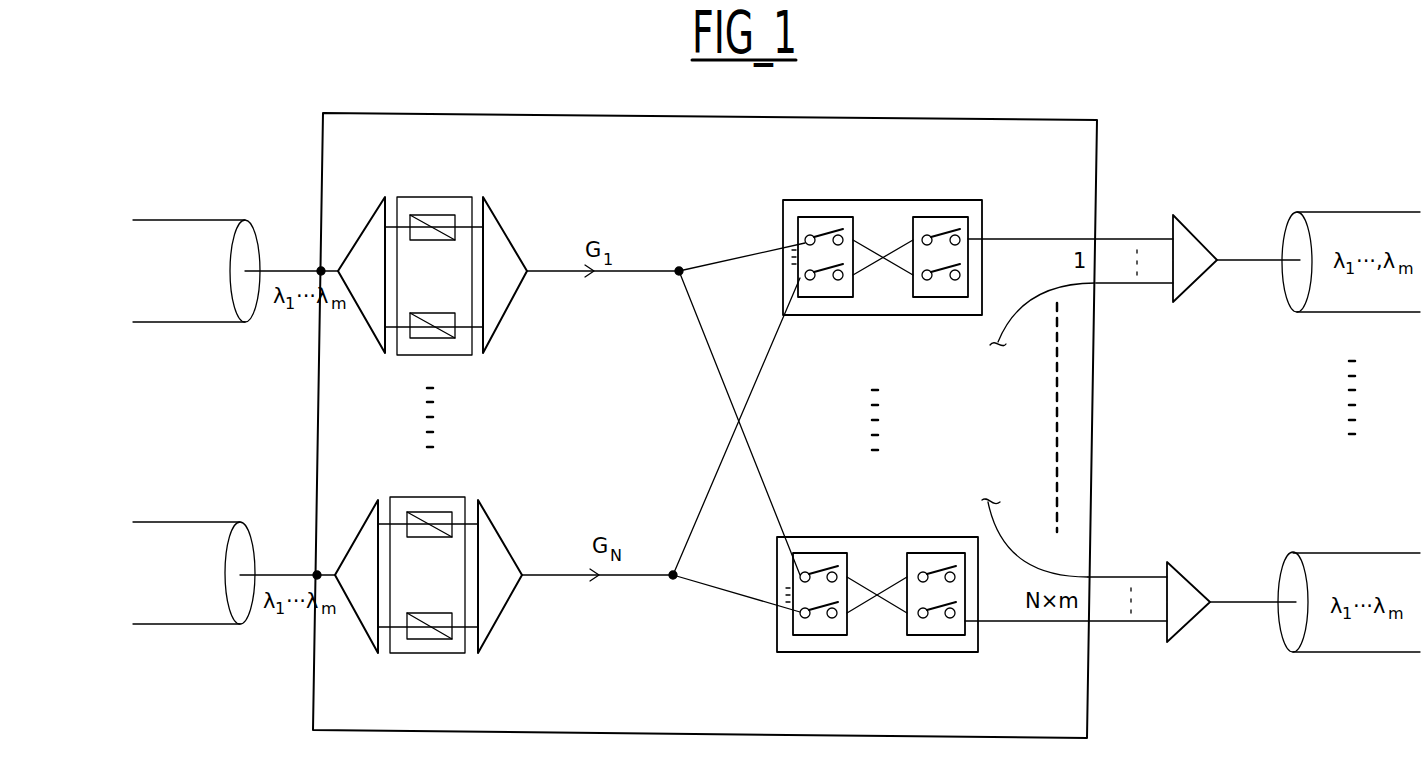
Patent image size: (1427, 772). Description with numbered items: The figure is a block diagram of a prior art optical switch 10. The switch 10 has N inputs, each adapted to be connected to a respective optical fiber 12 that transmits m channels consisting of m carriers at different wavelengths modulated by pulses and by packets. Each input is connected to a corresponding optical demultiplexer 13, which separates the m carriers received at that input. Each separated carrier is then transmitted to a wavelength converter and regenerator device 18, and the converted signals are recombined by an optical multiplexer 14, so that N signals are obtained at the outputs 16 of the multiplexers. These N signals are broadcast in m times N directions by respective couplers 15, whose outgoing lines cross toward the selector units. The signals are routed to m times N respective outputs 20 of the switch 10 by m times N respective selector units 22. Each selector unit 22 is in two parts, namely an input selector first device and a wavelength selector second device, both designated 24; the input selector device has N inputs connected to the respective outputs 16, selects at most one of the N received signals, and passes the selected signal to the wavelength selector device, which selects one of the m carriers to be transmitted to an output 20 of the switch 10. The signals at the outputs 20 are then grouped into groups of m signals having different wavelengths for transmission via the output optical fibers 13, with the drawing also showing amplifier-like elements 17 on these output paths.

The switch 10 is at (426, 108).
The optical fiber 12 is at (173, 248).
The optical demultiplexer 13 is at (363, 230).
The optical multiplexer 14 is at (503, 247).
The coupler 15 is at (673, 575).
The output of converter and regenerator device 16 is at (529, 274).
The output amplifiers 17 is at (1225, 655).
The wavelength converter and regenerator device 18 is at (450, 197).
The output 20 is at (1096, 238).
The selector unit 22 is at (879, 403).
The input selector first device / wavelength selector second device 24 is at (884, 426).